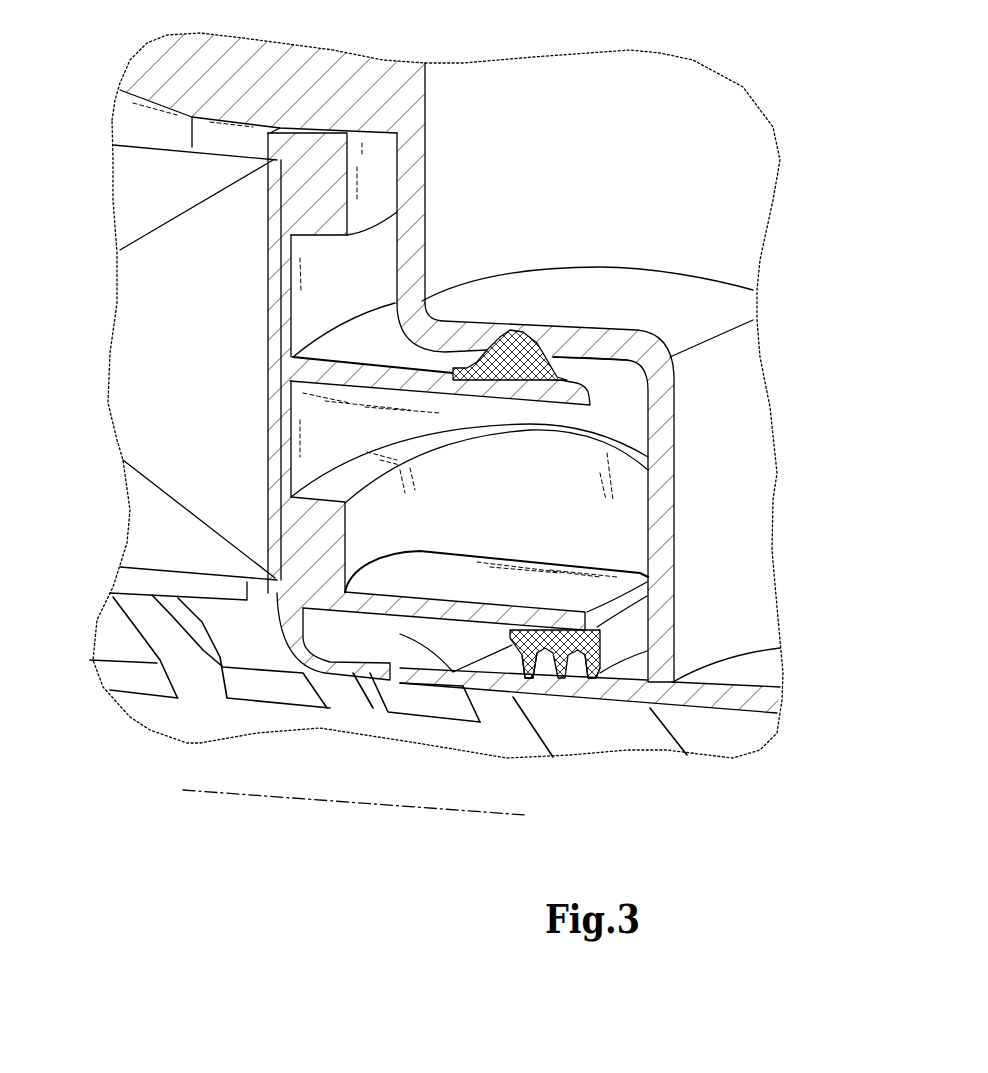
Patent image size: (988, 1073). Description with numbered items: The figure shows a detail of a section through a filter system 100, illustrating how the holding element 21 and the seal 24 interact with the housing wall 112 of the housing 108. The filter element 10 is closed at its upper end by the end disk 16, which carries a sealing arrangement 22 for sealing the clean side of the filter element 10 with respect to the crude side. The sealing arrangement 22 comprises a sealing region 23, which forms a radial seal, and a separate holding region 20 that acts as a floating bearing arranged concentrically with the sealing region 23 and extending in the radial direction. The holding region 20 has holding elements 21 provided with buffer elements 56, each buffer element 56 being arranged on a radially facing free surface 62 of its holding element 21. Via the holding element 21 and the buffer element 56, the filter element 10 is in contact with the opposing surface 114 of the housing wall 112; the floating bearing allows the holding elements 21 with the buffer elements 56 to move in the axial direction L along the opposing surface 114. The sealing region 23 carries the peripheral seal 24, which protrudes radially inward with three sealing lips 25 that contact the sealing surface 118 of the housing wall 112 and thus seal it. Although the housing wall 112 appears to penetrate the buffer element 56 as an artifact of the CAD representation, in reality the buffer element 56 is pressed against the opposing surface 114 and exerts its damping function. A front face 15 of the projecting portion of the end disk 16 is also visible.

The filter system 100 is at (683, 141).
The housing 108 is at (430, 107).
The filter element 10 is at (163, 294).
The end disk 16 is at (307, 131).
The front face of projection 15 is at (380, 173).
The holding region 20 is at (630, 400).
The free surface 62 is at (443, 354).
The buffer element 56 is at (513, 333).
The holding element 21 is at (556, 359).
The opposing surface 114 is at (613, 372).
The sealing arrangement 22 is at (702, 481).
The sealing region 23 is at (624, 633).
The sealing surface 118 is at (490, 637).
The sealing lip 25 is at (567, 690).
The seal 24 is at (623, 660).
The housing wall 112 is at (715, 700).
The axial direction L is at (360, 813).